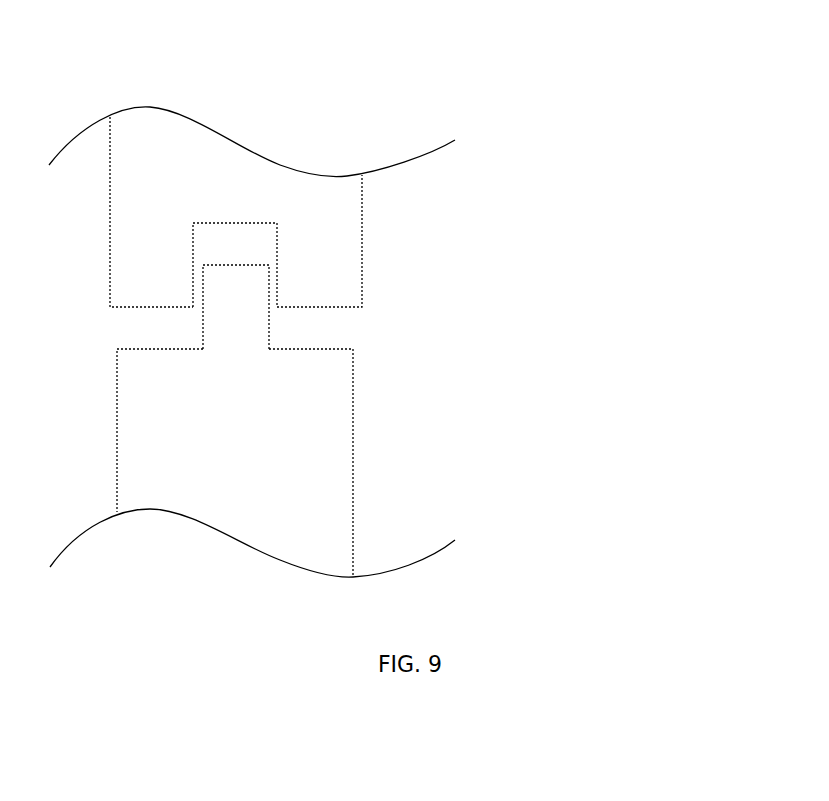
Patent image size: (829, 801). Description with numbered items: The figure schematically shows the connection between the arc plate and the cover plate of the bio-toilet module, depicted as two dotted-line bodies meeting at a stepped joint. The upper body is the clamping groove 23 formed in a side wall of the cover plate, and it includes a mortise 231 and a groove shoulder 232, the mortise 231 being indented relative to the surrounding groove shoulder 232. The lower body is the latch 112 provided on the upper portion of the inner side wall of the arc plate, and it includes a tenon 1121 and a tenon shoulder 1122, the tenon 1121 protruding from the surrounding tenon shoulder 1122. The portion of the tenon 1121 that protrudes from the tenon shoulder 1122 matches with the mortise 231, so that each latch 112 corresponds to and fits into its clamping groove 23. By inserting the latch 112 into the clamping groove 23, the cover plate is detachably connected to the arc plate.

The clamping groove 23 is at (389, 164).
The mortise 231 is at (237, 223).
The groove shoulder 232 is at (320, 272).
The latch 112 is at (410, 421).
The tenon 1121 is at (236, 307).
The tenon shoulder 1122 is at (297, 349).